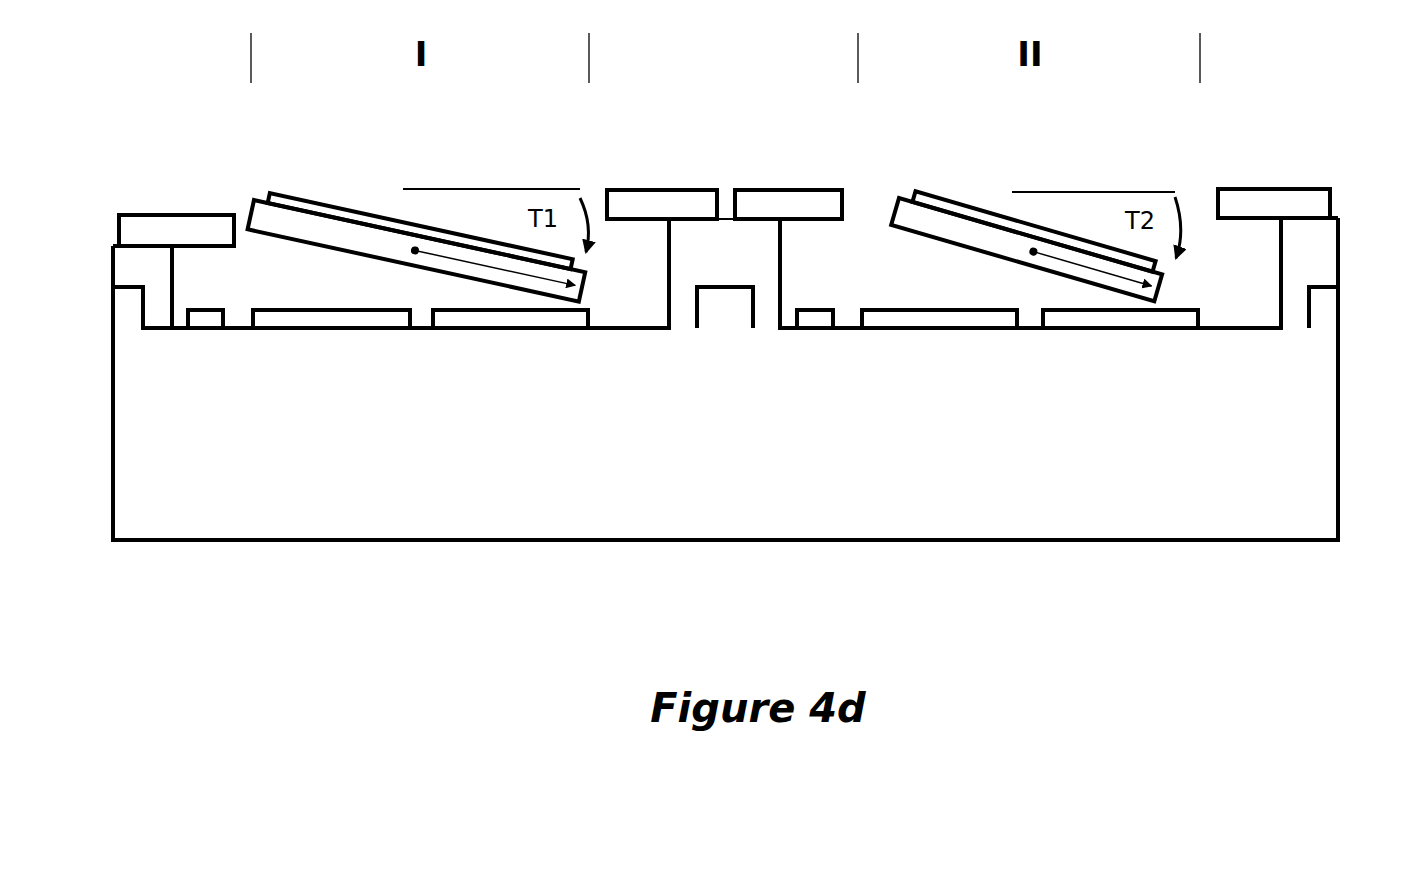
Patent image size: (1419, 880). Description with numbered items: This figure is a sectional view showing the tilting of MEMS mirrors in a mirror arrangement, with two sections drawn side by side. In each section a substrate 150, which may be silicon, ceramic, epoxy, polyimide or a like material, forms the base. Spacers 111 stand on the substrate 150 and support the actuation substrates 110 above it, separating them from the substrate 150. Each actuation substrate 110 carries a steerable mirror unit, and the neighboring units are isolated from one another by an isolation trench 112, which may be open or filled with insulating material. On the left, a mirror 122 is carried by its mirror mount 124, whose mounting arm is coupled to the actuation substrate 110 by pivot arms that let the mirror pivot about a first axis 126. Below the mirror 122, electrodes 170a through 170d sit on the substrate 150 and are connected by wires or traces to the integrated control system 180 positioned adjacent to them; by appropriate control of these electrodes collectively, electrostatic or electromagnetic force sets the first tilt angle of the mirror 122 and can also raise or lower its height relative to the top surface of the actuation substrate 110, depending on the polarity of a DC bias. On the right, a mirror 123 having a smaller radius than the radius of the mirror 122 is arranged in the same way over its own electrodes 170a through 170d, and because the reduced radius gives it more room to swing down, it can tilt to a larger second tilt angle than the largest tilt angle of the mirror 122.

The actuation substrate 110 is at (155, 205).
The spacer 111 is at (725, 273).
The isolation trench 112 is at (726, 203).
The mirror 122 is at (317, 200).
The mirror 123 is at (932, 200).
The mirror mount 124 is at (275, 218).
The first axis 126 is at (913, 197).
The substrate 150 is at (725, 379).
The electrode 170a is at (332, 320).
The electrode 170d is at (519, 320).
The integrated control system 180 is at (205, 306).